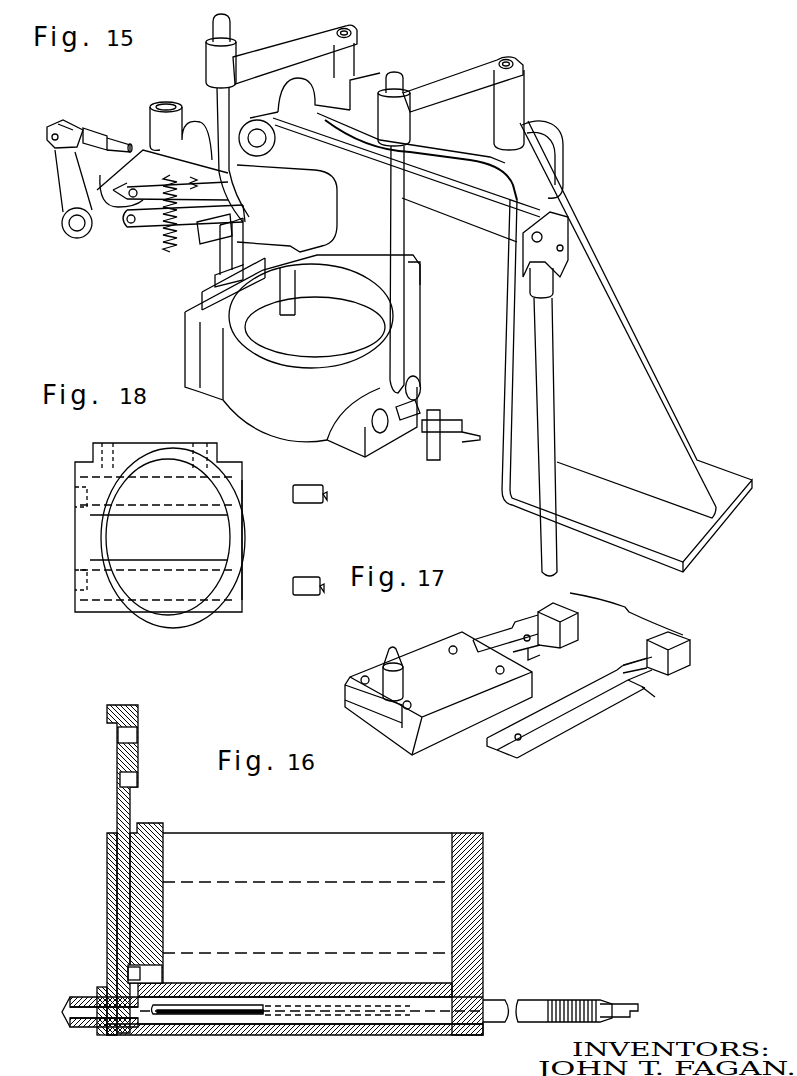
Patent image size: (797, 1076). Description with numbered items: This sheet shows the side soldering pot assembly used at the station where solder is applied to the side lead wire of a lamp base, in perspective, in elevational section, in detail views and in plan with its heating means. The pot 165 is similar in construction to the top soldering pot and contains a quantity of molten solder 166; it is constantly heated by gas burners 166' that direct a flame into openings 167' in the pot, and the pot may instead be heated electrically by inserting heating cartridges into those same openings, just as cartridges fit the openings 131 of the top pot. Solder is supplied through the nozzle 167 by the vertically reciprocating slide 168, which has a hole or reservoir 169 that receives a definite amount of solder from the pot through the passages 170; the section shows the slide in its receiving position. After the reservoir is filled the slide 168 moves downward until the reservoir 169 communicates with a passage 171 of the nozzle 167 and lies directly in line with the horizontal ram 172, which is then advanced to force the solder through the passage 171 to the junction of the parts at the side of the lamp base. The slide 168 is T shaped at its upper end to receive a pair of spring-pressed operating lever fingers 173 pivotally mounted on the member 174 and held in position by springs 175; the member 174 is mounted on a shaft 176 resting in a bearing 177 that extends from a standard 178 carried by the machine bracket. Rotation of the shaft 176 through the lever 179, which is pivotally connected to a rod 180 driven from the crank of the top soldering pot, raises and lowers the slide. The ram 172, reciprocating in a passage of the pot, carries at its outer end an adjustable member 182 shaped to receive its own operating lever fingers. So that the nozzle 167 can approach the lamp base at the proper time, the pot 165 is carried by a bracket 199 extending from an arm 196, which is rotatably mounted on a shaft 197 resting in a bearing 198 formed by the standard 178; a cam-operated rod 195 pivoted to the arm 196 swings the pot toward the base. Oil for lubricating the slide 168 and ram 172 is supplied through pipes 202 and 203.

In FIG. 16, the openings 131 is at (240, 1020).
In FIG. 15, the pot 165 is at (308, 357).
In FIG. 18, the pot 165 is at (163, 448).
In FIG. 16, the pot 165 is at (483, 853).
In FIG. 16, the molten solder 166 is at (307, 905).
In FIG. 18, the gas burners 166' is at (314, 540).
In FIG. 17, the nozzle 167 is at (438, 689).
In FIG. 16, the nozzle 167 is at (85, 1008).
In FIG. 15, the openings 167' is at (415, 419).
In FIG. 18, the openings 167' is at (264, 531).
In FIG. 15, the slide 168 is at (247, 247).
In FIG. 17, the slide 168 is at (507, 636).
In FIG. 16, the slide 168 is at (127, 808).
In FIG. 17, the reservoir 169 is at (520, 736).
In FIG. 16, the reservoir 169 is at (128, 973).
In FIG. 16, the passages 170 is at (155, 977).
In FIG. 16, the passage 171 is at (77, 1014).
In FIG. 15, the ram 172 is at (407, 420).
In FIG. 16, the ram 172 is at (195, 1014).
In FIG. 15, the operating lever fingers 173 is at (209, 230).
In FIG. 15, the member 174 is at (152, 215).
In FIG. 15, the springs 175 is at (195, 190).
In FIG. 15, the shaft 176 is at (78, 228).
In FIG. 15, the bearing 177 is at (142, 150).
In FIG. 15, the standard 178 is at (365, 97).
In FIG. 15, the lever 179 is at (62, 190).
In FIG. 15, the rod 180 is at (117, 148).
In FIG. 15, the adjustable member 182 is at (438, 460).
In FIG. 15, the rod 195 is at (552, 432).
In FIG. 15, the arm 196 is at (472, 212).
In FIG. 15, the shaft 197 is at (263, 140).
In FIG. 15, the bearing 198 is at (290, 97).
In FIG. 15, the bracket 199 is at (340, 218).
In FIG. 15, the pipe 202 is at (241, 190).
In FIG. 15, the pipe 203 is at (408, 350).